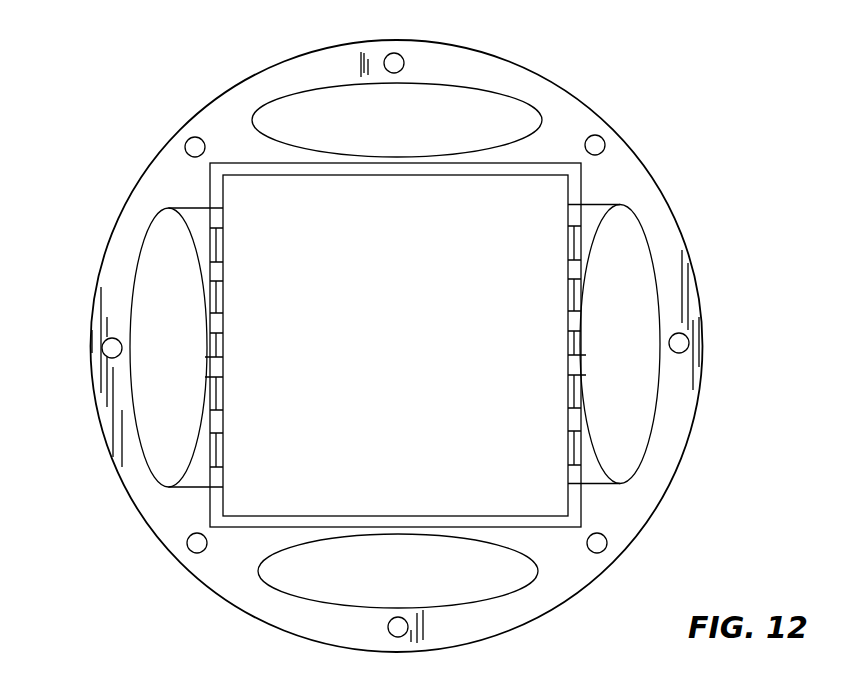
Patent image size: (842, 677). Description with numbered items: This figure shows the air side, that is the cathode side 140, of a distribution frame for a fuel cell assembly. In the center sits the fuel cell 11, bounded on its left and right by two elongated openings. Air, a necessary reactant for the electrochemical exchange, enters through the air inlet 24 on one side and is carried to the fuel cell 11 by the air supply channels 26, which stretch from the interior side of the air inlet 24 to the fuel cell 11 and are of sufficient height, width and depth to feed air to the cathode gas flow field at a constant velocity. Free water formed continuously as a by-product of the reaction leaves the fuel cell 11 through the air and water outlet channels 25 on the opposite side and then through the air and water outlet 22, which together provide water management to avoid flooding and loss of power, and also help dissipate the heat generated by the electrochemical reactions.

The cathode side 140 is at (678, 101).
The fuel cell 11 is at (535, 209).
The air and water outlet 22 is at (625, 423).
The air inlet 24 is at (160, 279).
The air and water outlet channels 25 is at (590, 323).
The air supply channels 26 is at (203, 371).